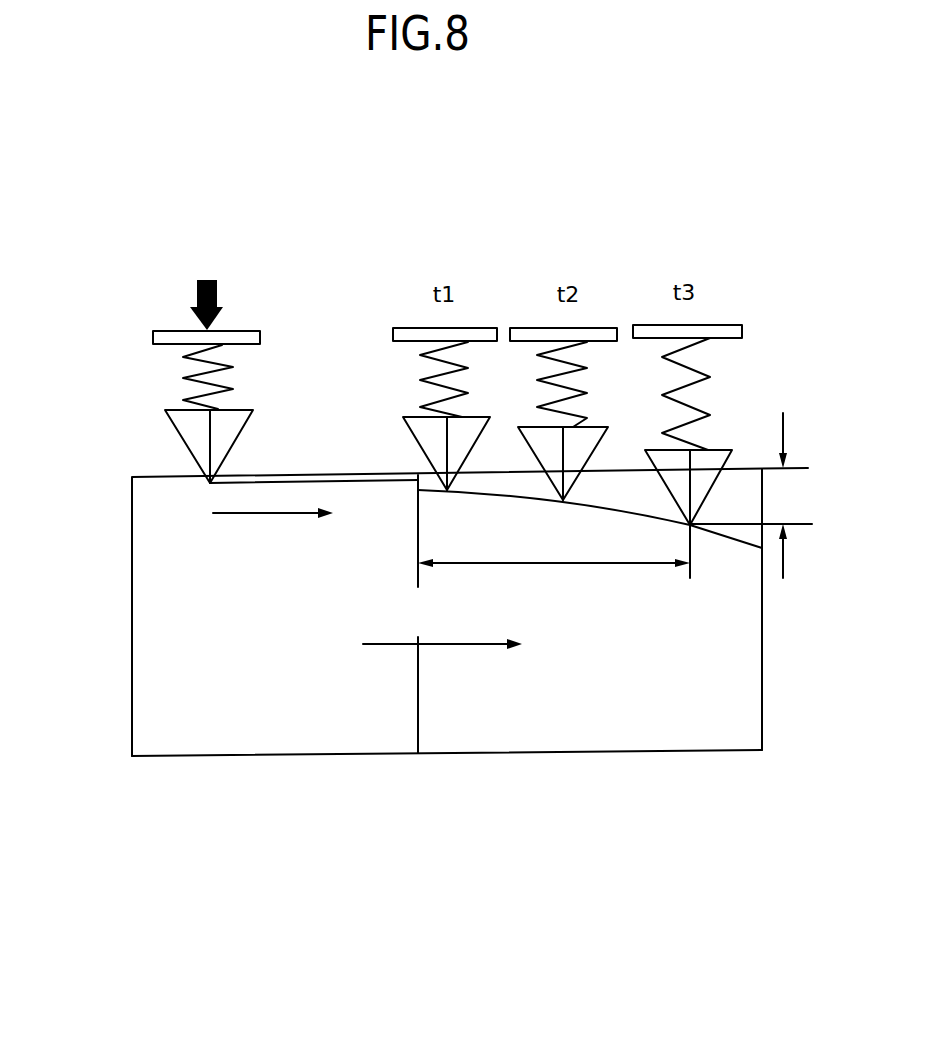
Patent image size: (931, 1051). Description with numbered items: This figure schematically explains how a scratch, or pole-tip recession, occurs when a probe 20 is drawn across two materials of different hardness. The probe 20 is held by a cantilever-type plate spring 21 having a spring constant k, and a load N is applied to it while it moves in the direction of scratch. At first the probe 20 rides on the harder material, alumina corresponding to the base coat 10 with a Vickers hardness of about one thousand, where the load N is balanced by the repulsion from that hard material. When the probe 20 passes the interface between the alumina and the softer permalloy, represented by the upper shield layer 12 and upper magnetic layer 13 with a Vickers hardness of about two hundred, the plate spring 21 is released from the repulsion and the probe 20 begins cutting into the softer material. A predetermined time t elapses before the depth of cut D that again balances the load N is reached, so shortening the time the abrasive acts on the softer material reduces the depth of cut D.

The base coat 10 is at (182, 735).
The upper shield layer 12 is at (576, 591).
The upper magnetic layer 13 is at (480, 732).
The probe 20 is at (196, 437).
The plate spring 21 is at (187, 353).